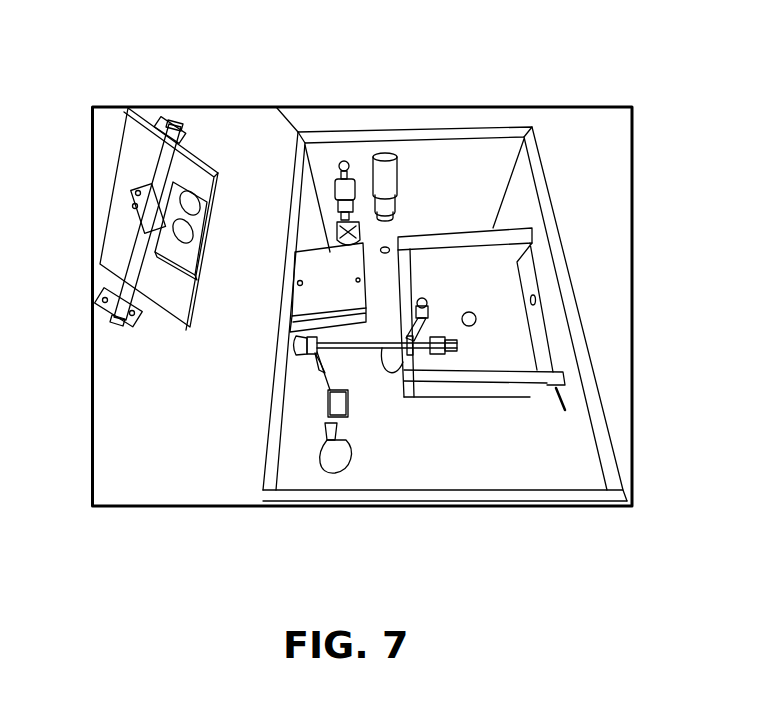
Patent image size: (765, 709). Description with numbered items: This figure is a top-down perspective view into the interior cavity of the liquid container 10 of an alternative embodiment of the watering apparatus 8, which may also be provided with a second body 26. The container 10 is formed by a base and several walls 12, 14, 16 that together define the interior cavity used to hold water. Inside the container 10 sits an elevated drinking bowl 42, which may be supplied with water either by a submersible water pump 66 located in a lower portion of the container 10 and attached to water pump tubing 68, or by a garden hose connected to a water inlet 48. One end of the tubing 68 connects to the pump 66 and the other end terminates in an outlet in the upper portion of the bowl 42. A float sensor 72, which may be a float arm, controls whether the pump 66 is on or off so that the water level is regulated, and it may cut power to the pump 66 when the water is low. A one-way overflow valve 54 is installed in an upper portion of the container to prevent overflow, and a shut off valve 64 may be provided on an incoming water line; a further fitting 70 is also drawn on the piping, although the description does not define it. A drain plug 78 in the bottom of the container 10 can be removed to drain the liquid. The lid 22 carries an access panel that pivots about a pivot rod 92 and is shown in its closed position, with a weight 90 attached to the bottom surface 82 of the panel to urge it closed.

The temperature-regulated watering apparatus 8 is at (98, 424).
The liquid container 10 is at (579, 478).
The wall 12 is at (612, 428).
The wall 14 is at (495, 128).
The wall 16 is at (527, 497).
The lid 22 is at (167, 483).
The second body 26 is at (296, 268).
The elevated drinking bowl 42 is at (526, 290).
The water inlet 48 is at (386, 152).
The one-way overflow valve 54 is at (340, 272).
The shut off valve 64 is at (343, 160).
The submersible water pump 66 is at (328, 407).
The water pump tubing 68 is at (458, 352).
The valve 70 is at (317, 352).
The float sensor 72 is at (424, 345).
The drain plug 78 is at (388, 247).
The bottom surface 82 is at (113, 133).
The weight 90 is at (190, 190).
The pivot rod 92 is at (178, 122).